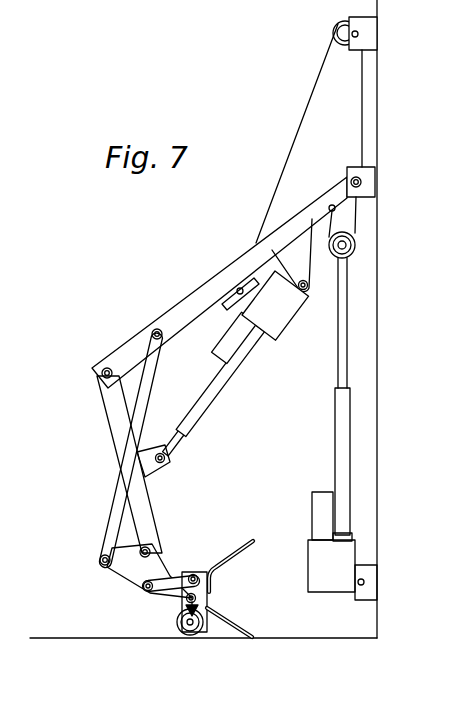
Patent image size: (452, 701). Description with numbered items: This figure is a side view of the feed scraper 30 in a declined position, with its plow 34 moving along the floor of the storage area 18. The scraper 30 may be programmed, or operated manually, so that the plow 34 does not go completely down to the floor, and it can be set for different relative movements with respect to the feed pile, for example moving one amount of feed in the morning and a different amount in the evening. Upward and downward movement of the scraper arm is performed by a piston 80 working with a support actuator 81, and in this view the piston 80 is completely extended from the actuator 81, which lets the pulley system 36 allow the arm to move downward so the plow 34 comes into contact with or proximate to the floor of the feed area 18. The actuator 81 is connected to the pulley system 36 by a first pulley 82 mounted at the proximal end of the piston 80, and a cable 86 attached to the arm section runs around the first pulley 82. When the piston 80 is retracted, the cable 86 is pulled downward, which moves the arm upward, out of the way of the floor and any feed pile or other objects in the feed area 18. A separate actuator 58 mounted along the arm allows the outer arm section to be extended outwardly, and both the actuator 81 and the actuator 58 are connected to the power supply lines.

The storage area 18 is at (100, 637).
The feed scraper 30 is at (101, 316).
The plow 34 is at (212, 565).
The pulley system 36 is at (281, 124).
The actuator 58 is at (216, 392).
The piston 80 is at (336, 368).
The actuator 81 is at (334, 462).
The first pulley 82 is at (358, 248).
The cable 86 is at (364, 111).